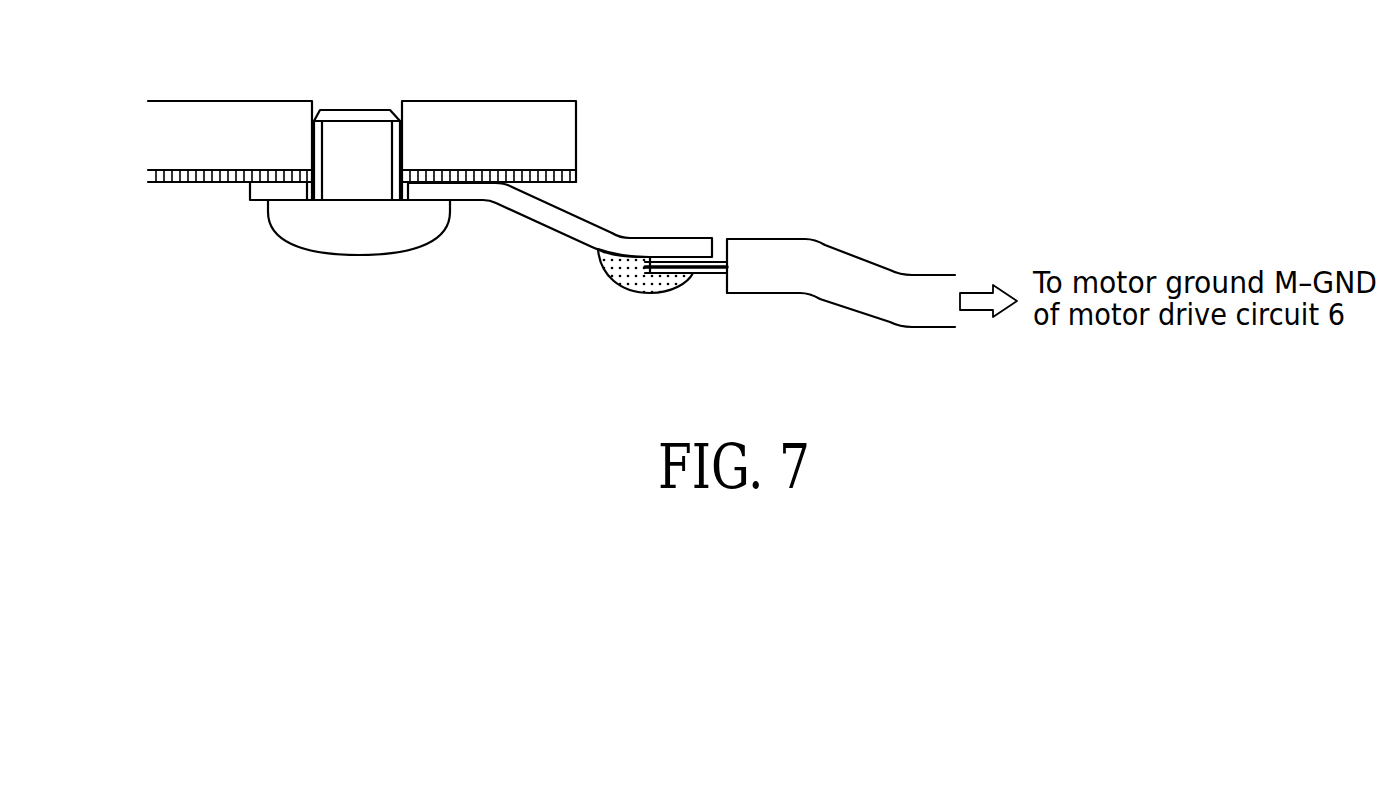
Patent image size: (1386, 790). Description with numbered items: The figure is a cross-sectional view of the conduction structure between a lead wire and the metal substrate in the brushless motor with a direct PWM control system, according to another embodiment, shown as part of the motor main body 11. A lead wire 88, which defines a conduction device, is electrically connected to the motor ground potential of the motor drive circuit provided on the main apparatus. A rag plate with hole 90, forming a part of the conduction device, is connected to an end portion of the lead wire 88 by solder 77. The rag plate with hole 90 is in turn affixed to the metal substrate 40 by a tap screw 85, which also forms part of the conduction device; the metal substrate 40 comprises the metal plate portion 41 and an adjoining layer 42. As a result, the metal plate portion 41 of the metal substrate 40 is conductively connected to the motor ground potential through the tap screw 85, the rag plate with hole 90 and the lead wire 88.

The motor (chassis body) 11 is at (207, 88).
The tap screw 85 is at (357, 110).
The metal substrate 40 is at (568, 140).
The metal plate portion 41 is at (576, 128).
The insulating layer 42 is at (539, 165).
The rag plate with hole 90 is at (542, 224).
The solder 77 is at (623, 278).
The lead wire 88 is at (710, 275).